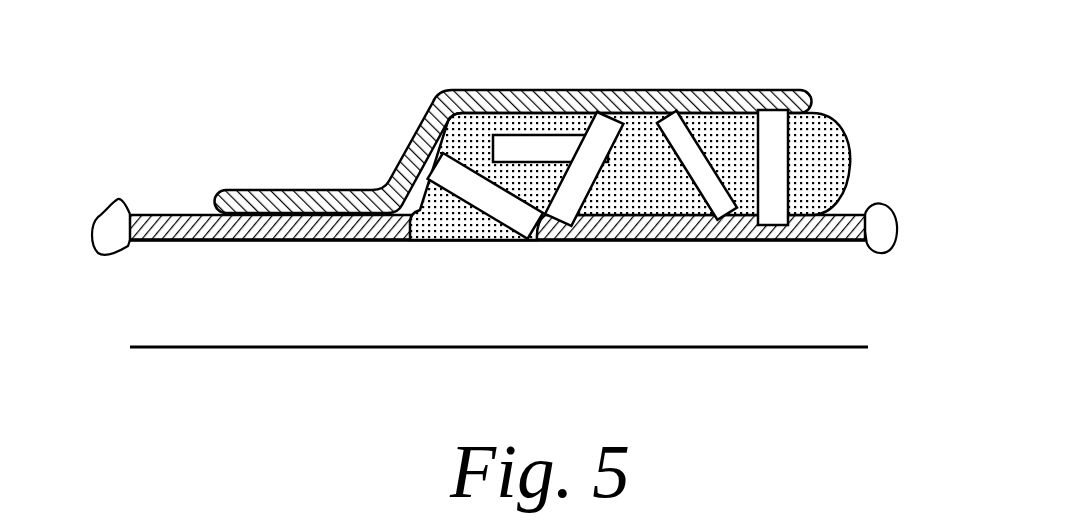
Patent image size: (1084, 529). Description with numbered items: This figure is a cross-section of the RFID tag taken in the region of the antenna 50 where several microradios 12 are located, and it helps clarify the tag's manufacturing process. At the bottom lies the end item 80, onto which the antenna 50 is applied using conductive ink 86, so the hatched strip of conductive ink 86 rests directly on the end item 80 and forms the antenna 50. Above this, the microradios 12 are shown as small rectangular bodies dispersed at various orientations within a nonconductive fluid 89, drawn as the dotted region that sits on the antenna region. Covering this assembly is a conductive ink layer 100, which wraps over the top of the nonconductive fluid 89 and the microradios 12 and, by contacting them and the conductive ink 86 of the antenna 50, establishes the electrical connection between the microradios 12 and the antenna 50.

The conductive ink layer 100 is at (497, 216).
The microradios 12 is at (677, 128).
The antenna 50 is at (152, 191).
The end item 80 is at (327, 295).
The conductive ink 86 is at (497, 242).
The nonconductive fluid 89 is at (445, 232).